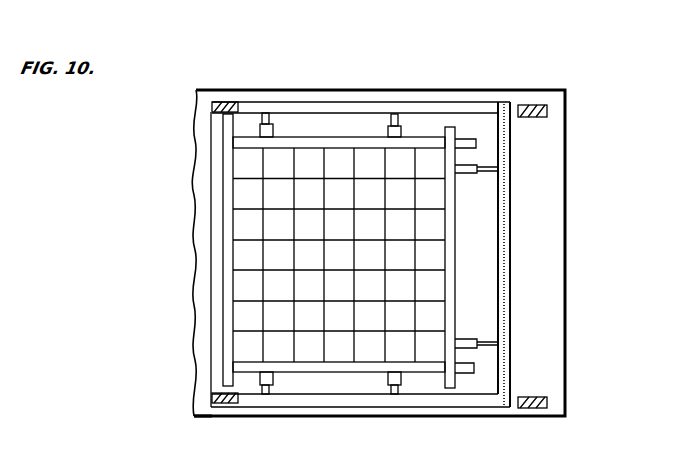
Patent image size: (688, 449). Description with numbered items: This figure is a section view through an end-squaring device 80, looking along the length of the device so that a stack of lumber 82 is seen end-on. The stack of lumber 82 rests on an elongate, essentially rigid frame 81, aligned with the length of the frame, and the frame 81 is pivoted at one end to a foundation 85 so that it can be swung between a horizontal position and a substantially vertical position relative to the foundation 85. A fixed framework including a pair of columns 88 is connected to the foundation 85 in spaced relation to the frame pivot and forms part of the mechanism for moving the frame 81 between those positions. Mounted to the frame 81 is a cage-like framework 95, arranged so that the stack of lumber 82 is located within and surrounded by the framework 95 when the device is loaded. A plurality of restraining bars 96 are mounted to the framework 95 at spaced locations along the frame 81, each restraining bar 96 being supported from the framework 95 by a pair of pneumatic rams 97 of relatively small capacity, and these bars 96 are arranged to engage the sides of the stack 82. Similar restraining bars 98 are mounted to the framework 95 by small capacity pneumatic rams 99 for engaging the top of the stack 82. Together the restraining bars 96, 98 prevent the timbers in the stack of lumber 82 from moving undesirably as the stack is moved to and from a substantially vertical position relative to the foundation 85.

The end-squaring device 80 is at (586, 174).
The frame 81 is at (210, 273).
The stack of lumber 82 is at (335, 172).
The foundation 85 is at (197, 369).
The columns 88 is at (547, 111).
The cage-like framework 95 is at (505, 273).
The restraining bars 96 is at (297, 136).
The pneumatic rams 97 is at (264, 126).
The restraining bars 98 is at (455, 230).
The pneumatic rams 99 is at (475, 173).